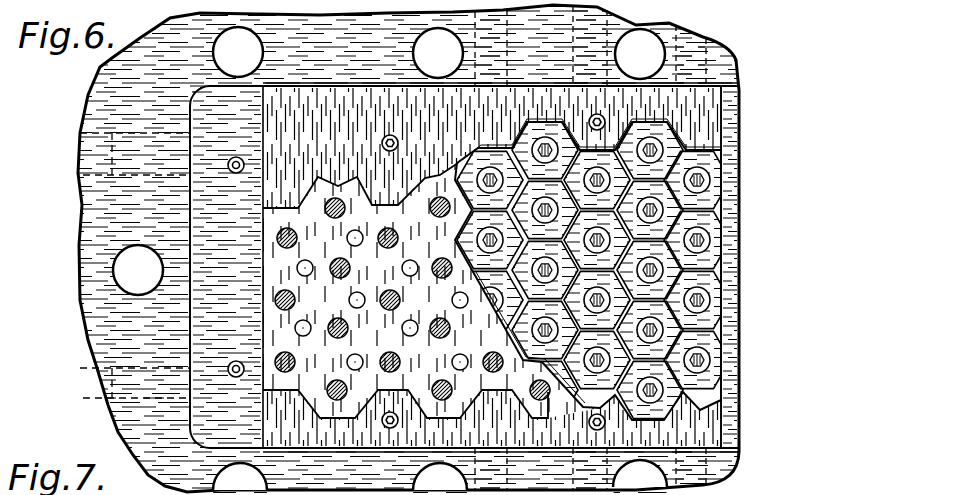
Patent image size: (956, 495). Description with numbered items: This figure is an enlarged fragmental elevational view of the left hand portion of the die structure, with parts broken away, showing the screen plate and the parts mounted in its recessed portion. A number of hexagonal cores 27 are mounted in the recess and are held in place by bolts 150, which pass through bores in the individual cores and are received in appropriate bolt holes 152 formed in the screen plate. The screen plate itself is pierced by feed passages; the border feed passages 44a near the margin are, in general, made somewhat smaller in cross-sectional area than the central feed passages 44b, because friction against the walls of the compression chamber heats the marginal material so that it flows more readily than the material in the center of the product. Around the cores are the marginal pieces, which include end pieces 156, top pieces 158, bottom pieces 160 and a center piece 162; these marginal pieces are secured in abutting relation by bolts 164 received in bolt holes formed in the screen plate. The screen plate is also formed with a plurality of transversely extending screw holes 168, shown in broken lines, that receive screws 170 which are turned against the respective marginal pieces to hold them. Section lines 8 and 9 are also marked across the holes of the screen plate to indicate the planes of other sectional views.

In FIG. 6, the cores 27 is at (455, 162).
In FIG. 6, the section line 8 is at (305, 246).
In FIG. 6, the section line 9 is at (350, 278).
In FIG. 6, the border feed passages 44a is at (297, 267).
In FIG. 6, the central feed passages 44b is at (458, 292).
In FIG. 6, the bolts 150 is at (540, 147).
In FIG. 6, the bolt holes 152 is at (322, 202).
In FIG. 6, the end pieces 156 is at (198, 208).
In FIG. 6, the top pieces 158 is at (353, 100).
In FIG. 7, the top pieces 158 is at (750, 486).
In FIG. 6, the bottom pieces 160 is at (548, 438).
In FIG. 6, the center piece 162 is at (736, 423).
In FIG. 7, the center piece 162 is at (801, 494).
In FIG. 6, the bolts 164 is at (392, 140).
In FIG. 6, the screw holes 168 is at (585, 42).
In FIG. 6, the screws 170 is at (600, 31).